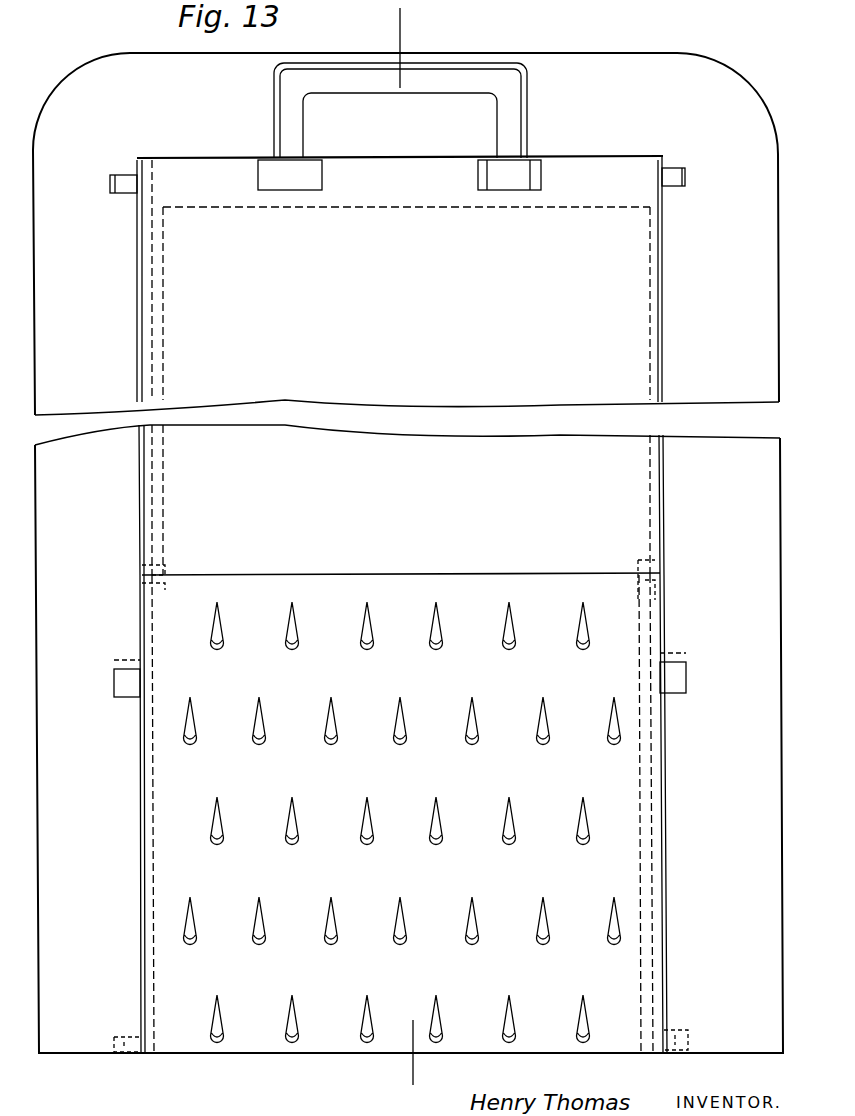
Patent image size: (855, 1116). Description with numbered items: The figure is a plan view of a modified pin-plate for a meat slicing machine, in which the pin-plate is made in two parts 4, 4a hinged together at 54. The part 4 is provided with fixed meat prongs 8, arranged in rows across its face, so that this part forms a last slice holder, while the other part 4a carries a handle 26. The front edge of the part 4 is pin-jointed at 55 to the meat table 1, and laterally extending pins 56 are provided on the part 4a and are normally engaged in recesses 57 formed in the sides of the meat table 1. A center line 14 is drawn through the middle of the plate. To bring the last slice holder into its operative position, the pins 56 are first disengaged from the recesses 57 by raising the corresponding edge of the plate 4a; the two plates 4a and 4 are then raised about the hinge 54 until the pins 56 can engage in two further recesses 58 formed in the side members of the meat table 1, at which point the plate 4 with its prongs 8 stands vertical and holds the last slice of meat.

The meat table 1 is at (62, 355).
The pin-plate part 4 is at (582, 667).
The pin-plate part 4a is at (612, 375).
The meat prongs 8 is at (296, 633).
The center line 14 is at (419, 551).
The handle 26 is at (508, 88).
The hinge 54 is at (167, 575).
The pin-joint 55 is at (137, 1057).
The laterally extending pins 56 is at (128, 175).
The recesses 57 is at (112, 197).
The recesses 58 is at (129, 698).